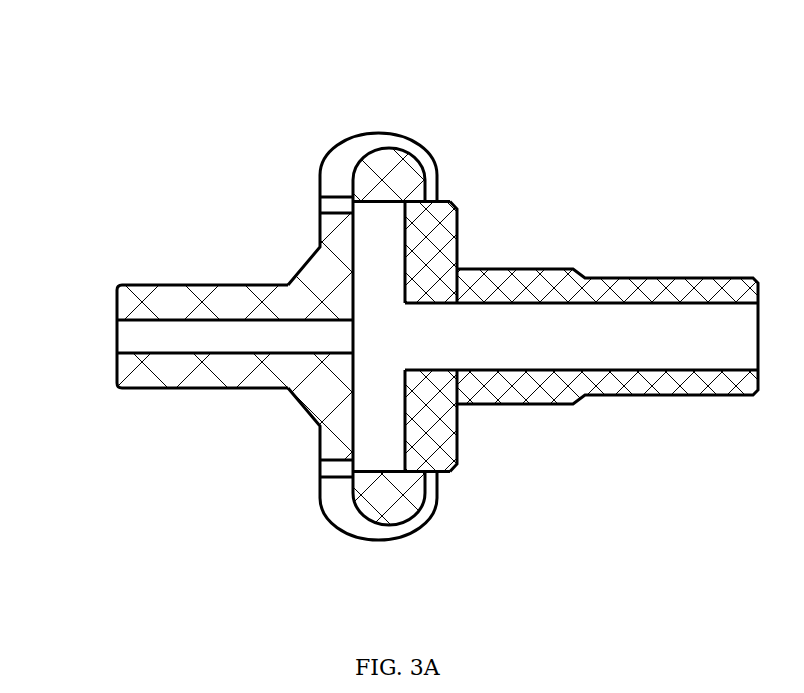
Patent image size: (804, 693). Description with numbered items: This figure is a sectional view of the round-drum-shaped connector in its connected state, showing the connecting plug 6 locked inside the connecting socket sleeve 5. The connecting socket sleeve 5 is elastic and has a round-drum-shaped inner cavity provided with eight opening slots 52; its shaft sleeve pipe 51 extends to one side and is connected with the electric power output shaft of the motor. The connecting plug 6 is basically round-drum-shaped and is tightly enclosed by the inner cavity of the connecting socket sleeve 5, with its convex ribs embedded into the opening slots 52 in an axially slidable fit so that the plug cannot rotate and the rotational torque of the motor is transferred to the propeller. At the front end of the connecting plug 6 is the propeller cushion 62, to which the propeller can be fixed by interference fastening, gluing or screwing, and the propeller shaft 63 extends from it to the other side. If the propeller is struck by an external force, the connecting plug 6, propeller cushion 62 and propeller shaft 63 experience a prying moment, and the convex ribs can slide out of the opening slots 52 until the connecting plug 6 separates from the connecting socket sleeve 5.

The shaft sleeve pipe 51 is at (155, 284).
The connecting socket sleeve 5 is at (318, 233).
The opening slots 52 is at (338, 182).
The connecting plug 6 is at (409, 165).
The propeller cushion 62 is at (438, 232).
The propeller shaft 63 is at (552, 268).